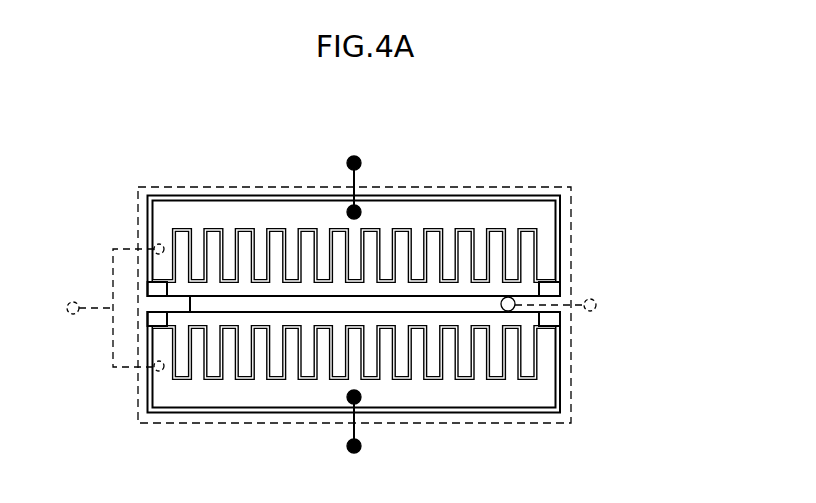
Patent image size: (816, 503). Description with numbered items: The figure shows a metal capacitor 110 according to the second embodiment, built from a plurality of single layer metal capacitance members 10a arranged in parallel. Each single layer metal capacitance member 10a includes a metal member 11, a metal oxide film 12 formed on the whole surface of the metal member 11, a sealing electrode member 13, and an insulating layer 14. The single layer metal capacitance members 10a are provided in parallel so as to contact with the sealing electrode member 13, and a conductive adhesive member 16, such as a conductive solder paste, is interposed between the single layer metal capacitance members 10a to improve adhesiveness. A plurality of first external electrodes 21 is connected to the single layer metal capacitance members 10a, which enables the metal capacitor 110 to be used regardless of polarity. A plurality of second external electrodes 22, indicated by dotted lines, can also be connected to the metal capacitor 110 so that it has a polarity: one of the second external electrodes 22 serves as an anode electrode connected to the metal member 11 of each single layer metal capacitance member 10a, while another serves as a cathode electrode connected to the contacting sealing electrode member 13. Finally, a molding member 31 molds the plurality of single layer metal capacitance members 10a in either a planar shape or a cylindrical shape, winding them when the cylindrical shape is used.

The metal capacitor 110 is at (240, 179).
The single layer metal capacitance member 10a is at (419, 304).
The metal member 11 is at (547, 212).
The metal oxide film 12 is at (556, 240).
The sealing electrode member 13 is at (518, 288).
The insulating layer 14 is at (389, 304).
The conductive adhesive member 16 is at (202, 306).
The first external electrode 21 is at (361, 160).
The second external electrode 22 is at (71, 315).
The molding member 31 is at (477, 423).